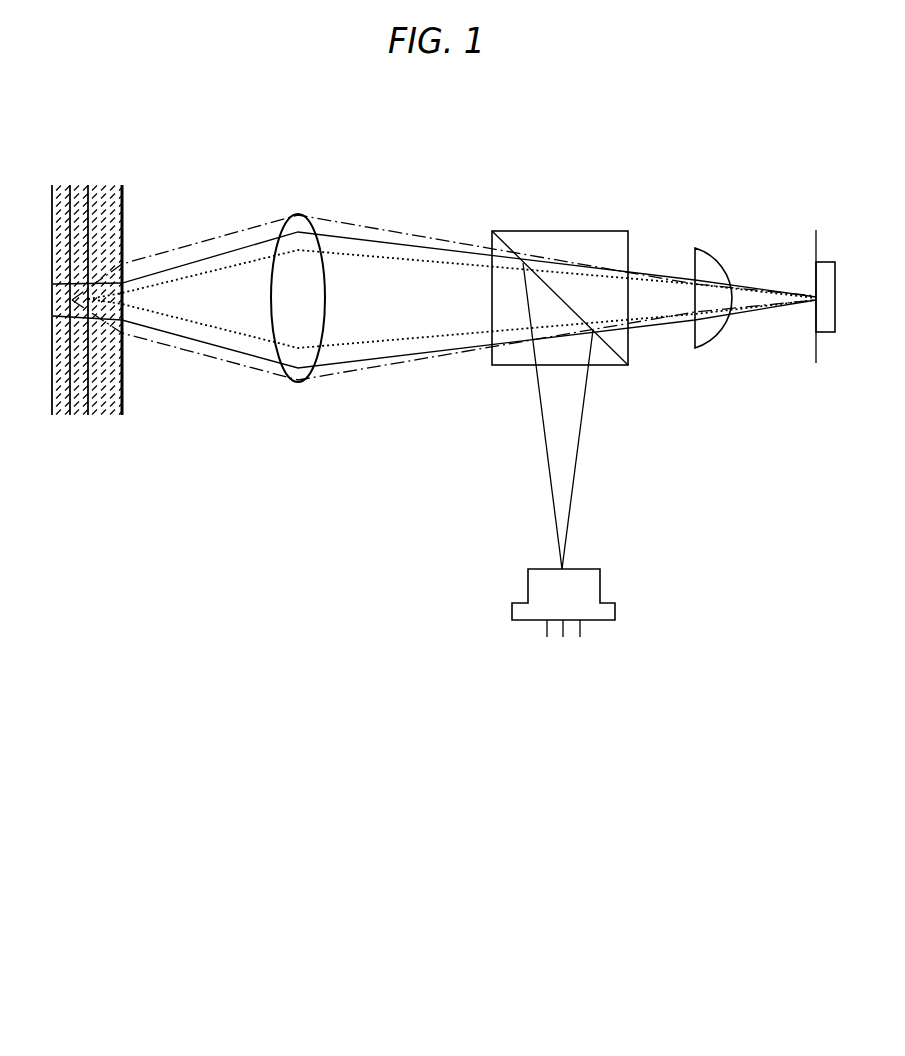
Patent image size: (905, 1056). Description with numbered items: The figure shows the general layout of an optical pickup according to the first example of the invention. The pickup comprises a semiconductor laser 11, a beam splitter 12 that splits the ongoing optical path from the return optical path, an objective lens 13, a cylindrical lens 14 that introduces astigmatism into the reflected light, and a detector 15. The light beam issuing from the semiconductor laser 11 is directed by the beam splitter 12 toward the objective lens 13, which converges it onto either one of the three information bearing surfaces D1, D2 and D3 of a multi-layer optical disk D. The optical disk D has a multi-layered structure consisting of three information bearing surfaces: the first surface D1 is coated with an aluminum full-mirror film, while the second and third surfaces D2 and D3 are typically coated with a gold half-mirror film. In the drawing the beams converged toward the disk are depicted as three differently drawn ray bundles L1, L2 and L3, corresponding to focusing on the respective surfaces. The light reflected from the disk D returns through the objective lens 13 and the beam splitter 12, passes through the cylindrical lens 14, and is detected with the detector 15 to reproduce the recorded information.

The multi-layer optical disk D is at (101, 185).
The first information bearing surface D1 is at (52, 417).
The second information bearing surface D2 is at (70, 417).
The third information bearing surface D3 is at (90, 417).
The first light beam L1 is at (240, 368).
The second light beam L2 is at (357, 353).
The third light beam L3 is at (425, 335).
The semiconductor laser 11 is at (615, 618).
The beam splitter 12 is at (559, 231).
The objective lens 13 is at (298, 214).
The cylindrical lens 14 is at (704, 248).
The detector 15 is at (827, 262).